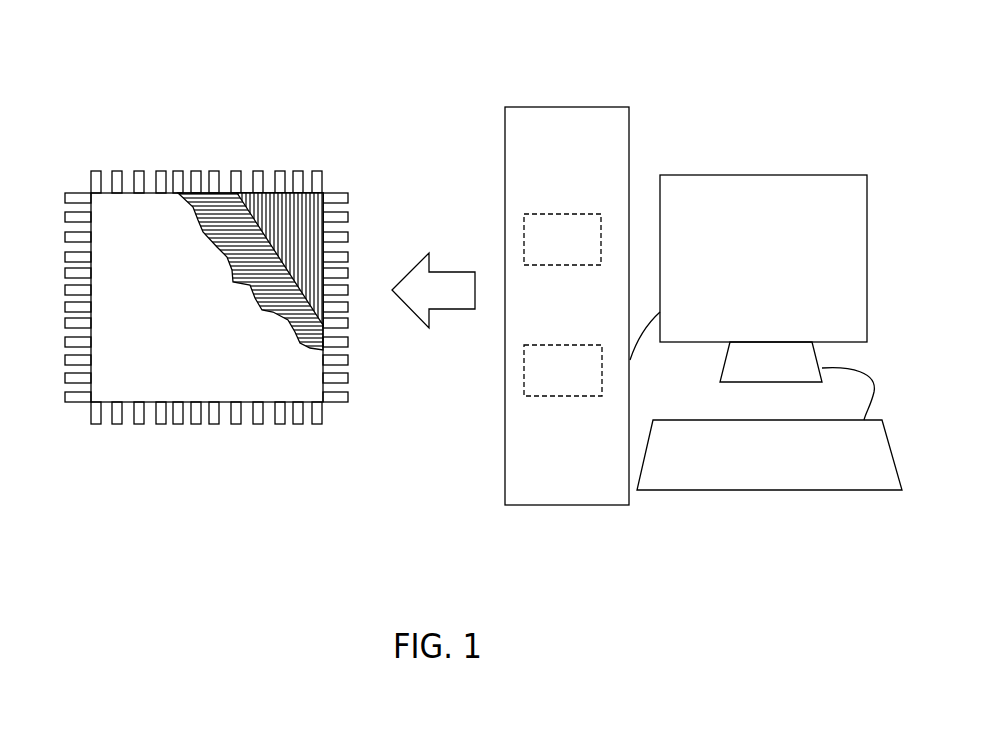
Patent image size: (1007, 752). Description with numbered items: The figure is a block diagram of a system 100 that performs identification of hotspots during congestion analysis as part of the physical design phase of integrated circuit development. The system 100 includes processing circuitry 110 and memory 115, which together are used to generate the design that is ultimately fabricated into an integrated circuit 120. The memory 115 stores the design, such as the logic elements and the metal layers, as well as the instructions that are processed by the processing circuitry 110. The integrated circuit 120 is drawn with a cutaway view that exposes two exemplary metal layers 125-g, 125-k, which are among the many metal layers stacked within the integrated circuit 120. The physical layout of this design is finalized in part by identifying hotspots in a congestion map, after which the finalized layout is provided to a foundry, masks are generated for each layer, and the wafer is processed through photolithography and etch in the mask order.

The system 100 is at (902, 84).
The processing circuitry 110 is at (562, 239).
The memory 115 is at (563, 370).
The integrated circuit 120 is at (184, 338).
The metal layer 125-g is at (216, 204).
The metal layer 125-k is at (308, 204).